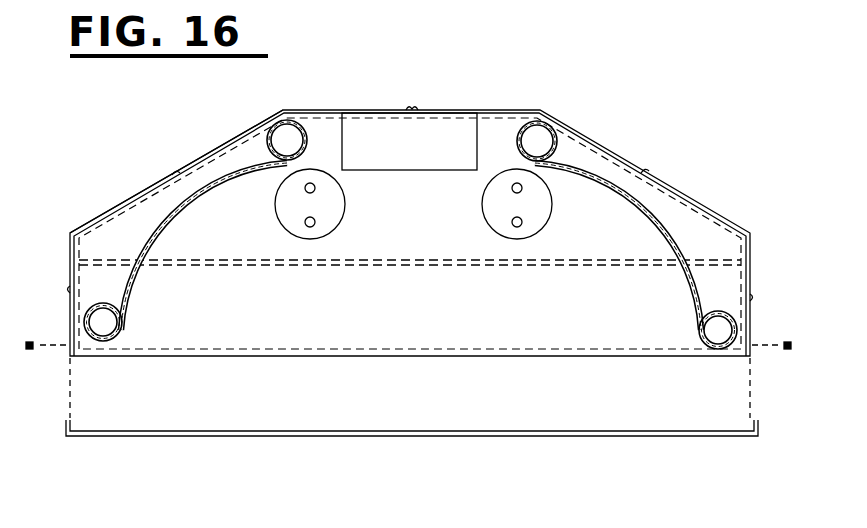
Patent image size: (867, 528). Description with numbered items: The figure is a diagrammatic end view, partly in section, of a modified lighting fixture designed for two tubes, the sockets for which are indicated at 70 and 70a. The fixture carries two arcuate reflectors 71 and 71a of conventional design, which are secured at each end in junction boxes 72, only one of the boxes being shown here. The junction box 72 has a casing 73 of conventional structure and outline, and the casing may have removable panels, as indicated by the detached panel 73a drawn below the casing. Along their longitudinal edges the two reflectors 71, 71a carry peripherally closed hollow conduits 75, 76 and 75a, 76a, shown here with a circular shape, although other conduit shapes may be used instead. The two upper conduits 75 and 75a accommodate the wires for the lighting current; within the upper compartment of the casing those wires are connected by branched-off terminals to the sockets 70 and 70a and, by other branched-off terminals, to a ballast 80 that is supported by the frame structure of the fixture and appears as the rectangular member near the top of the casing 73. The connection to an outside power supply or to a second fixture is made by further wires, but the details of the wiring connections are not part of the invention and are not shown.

The socket 70 is at (340, 204).
The socket 70a is at (540, 212).
The arcuate reflector 71 is at (186, 200).
The arcuate reflector 71a is at (652, 221).
The junction box 72 is at (672, 180).
The casing 73 is at (135, 196).
The detached panel 73a is at (450, 437).
The hollow conduit 75 is at (288, 138).
The hollow conduit 75a is at (543, 139).
The hollow conduit 76 is at (99, 318).
The hollow conduit 76a is at (725, 333).
The ballast 80 is at (432, 133).